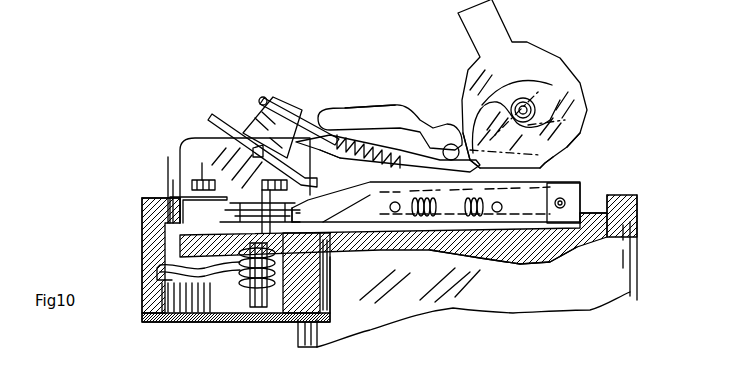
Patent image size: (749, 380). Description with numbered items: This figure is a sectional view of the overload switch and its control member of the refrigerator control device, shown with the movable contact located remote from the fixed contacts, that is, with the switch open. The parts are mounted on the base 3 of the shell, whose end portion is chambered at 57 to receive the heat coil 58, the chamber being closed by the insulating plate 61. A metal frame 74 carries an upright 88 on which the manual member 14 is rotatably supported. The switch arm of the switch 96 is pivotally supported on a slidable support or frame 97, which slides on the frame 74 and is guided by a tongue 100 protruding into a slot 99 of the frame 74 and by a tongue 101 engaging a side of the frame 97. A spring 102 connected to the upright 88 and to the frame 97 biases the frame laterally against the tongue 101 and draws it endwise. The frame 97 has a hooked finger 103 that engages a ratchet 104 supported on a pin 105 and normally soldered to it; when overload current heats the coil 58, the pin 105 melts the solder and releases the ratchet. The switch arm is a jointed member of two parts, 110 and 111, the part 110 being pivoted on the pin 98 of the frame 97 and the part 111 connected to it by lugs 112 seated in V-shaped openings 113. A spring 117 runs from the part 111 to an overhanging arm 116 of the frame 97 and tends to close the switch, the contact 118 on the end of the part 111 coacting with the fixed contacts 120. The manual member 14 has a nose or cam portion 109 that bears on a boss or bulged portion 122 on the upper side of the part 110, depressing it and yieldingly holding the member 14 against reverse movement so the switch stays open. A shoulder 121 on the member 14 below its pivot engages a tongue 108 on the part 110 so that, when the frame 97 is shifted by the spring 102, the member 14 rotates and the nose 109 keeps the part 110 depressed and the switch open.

The base 3 is at (143, 245).
The manual member 14 is at (560, 77).
The chamber 57 is at (197, 317).
The heat coil 58 is at (250, 287).
The plate 61 is at (210, 320).
The frame 74 is at (637, 208).
The upright 88 is at (535, 117).
The switch 96 is at (267, 102).
The slidable support or frame 97 is at (580, 190).
The pin 98 is at (607, 197).
The slot 99 is at (537, 258).
The tongue 100 is at (490, 243).
The tongue 101 is at (330, 215).
The spring 102 is at (420, 242).
The hooked finger 103 is at (300, 213).
The ratchet 104 is at (143, 223).
The pin 105 is at (258, 305).
The tongue 108 is at (543, 168).
The nose or cam portion 109 is at (477, 160).
The part 110 is at (445, 177).
The part 111 is at (337, 133).
The lugs 112 is at (398, 200).
The V-shaped openings 113 is at (392, 150).
The overhanging arm 116 is at (397, 110).
The spring 117 is at (360, 175).
The contact 118 is at (220, 117).
The fixed contacts 120 is at (240, 182).
The shoulder 121 is at (588, 138).
The boss or bulged portion 122 is at (514, 172).